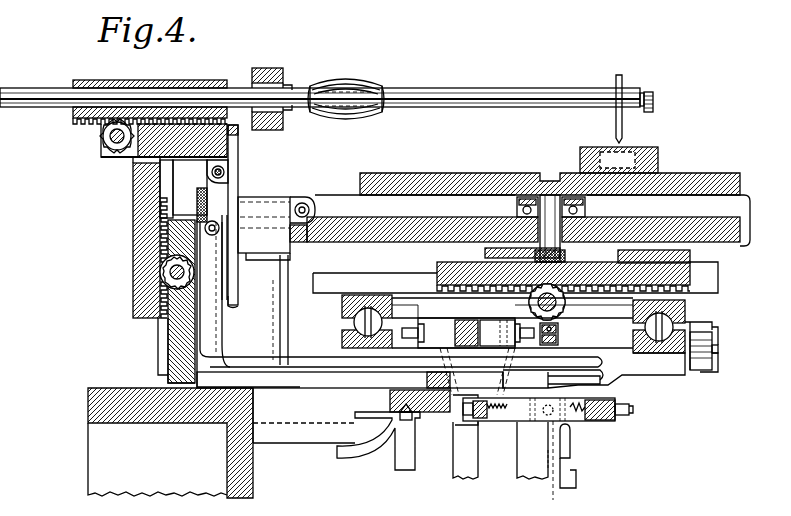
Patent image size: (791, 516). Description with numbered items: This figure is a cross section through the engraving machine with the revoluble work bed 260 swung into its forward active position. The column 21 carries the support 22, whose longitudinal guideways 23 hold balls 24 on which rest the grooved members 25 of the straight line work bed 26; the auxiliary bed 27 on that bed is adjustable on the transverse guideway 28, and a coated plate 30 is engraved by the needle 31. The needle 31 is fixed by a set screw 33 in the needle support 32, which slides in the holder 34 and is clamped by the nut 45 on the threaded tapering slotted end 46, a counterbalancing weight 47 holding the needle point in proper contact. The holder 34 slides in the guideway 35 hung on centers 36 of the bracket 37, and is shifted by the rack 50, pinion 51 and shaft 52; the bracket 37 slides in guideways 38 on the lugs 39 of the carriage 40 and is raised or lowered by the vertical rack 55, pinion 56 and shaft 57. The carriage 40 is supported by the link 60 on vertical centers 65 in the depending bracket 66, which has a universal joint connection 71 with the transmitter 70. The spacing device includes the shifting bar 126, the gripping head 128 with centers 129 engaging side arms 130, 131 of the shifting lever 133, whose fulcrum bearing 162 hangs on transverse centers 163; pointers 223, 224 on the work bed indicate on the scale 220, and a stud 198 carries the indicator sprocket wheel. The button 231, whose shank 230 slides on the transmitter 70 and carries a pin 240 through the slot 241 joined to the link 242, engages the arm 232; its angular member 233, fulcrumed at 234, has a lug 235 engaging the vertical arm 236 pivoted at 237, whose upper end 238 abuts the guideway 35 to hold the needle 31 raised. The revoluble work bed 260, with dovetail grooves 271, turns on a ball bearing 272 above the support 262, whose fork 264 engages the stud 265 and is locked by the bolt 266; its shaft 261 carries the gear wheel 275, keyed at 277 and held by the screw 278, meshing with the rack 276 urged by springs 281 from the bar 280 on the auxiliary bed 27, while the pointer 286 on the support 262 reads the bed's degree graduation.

The column 21 is at (170, 443).
The support 22 is at (631, 369).
The guideways 23 is at (437, 372).
The balls 24 is at (355, 326).
The grooved members 25 is at (345, 303).
The work bed 26 is at (512, 336).
The auxiliary bed 27 is at (438, 270).
The transverse guideway 28 is at (372, 280).
The coated plate 30 is at (658, 158).
The needle 31 is at (622, 76).
The needle support 32 is at (38, 80).
The set screw 33 is at (653, 101).
The holder 34 is at (190, 74).
The guideway 35 is at (135, 158).
The centers 36 is at (186, 166).
The bracket 37 is at (133, 205).
The guideways 38 is at (158, 352).
The lugs 39 is at (168, 332).
The carriage 40 is at (332, 380).
The nut 45 is at (276, 68).
The threaded tapering slotted end 46 is at (292, 87).
The counterbalancing weight 47 is at (350, 84).
The rack 50 is at (78, 121).
The pinion 51 is at (103, 134).
The shaft 52 is at (110, 146).
The vertically disposed rack 55 is at (160, 228).
The pinion 56 is at (168, 278).
The shaft 57 is at (170, 272).
The link 60 is at (376, 462).
The vertical centers 65 is at (400, 416).
The bracket 66 is at (390, 398).
The transmitter 70 is at (532, 478).
The universal joint connection 71 is at (596, 421).
The shifting bar 126 is at (450, 318).
The gripping head 128 is at (453, 333).
The centers 129 is at (408, 330).
The side arm 130 is at (497, 333).
The side arm 131 is at (436, 348).
The shifting lever 133 is at (468, 478).
The bearing 162 is at (558, 328).
The transverse centers 163 is at (558, 339).
The stud 198 is at (101, 508).
The scale 220 is at (718, 350).
The pointer 223 is at (718, 328).
The pointer 224 is at (720, 370).
The shank 230 is at (534, 404).
The button 231 is at (548, 374).
The arm 232 is at (264, 357).
The angular member 233 is at (222, 333).
The fulcrum 234 is at (264, 228).
The lug 235 is at (236, 306).
The vertical arm 236 is at (228, 274).
The pivot 237 is at (224, 172).
The upper end 238 is at (238, 150).
The pin 240 is at (563, 482).
The slot 241 is at (570, 448).
The link 242 is at (576, 488).
The revoluble work bed 260 is at (550, 171).
The shaft 261 is at (585, 217).
The support 262 is at (455, 216).
The fork 264 is at (292, 247).
The stud 265 is at (292, 322).
The locking bolt 266 is at (294, 205).
The dovetail grooves 271 is at (548, 176).
The ball bearing 272 is at (517, 207).
The gear wheel 275 is at (506, 249).
The rack 276 is at (640, 242).
The key 277 is at (545, 264).
The screw 278 is at (566, 300).
The bar 280 is at (690, 258).
The springs 281 is at (672, 242).
The pointer 286 is at (745, 205).